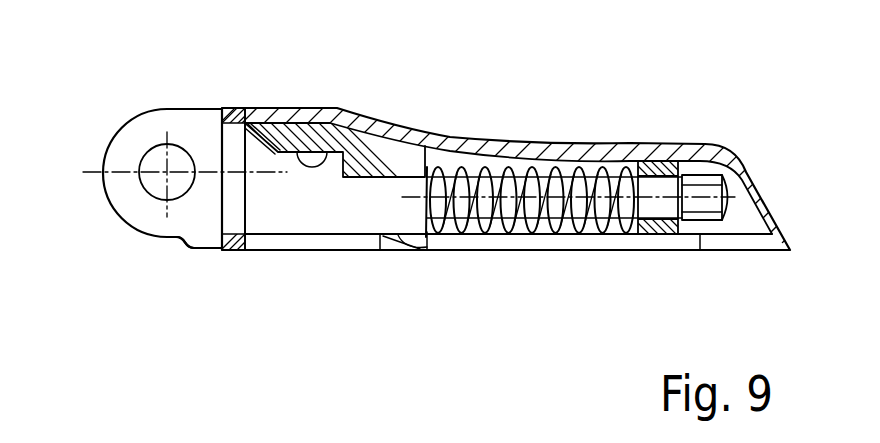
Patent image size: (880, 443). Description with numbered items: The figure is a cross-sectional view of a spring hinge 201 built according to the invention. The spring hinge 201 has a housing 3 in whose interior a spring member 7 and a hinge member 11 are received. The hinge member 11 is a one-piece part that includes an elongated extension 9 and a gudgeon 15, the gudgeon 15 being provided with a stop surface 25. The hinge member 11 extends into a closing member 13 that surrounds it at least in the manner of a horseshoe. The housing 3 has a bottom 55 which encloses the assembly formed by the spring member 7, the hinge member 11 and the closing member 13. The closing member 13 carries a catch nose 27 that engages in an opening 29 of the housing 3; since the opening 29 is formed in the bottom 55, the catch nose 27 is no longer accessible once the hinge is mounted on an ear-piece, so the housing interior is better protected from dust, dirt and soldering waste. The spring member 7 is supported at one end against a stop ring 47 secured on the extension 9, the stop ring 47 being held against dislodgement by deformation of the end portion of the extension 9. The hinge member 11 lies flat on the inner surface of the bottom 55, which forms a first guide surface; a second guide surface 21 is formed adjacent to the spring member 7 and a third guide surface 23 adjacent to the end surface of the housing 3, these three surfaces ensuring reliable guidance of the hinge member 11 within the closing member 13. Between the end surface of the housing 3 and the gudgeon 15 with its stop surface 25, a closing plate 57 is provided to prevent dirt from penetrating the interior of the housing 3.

The housing 3 is at (740, 170).
The spring member 7 is at (452, 215).
The elongated extension 9 is at (650, 213).
The hinge member 11 is at (263, 217).
The closing member 13 is at (275, 118).
The gudgeon 15 is at (120, 153).
The second guide surface 21 is at (412, 135).
The third guide surface 23 is at (343, 128).
The stop surface 25 is at (207, 110).
The catch nose 27 is at (405, 250).
The opening 29 is at (377, 242).
The stop ring 47 is at (660, 225).
The bottom 55 is at (512, 242).
The closing plate 57 is at (182, 240).
The spring hinge 201 is at (722, 128).